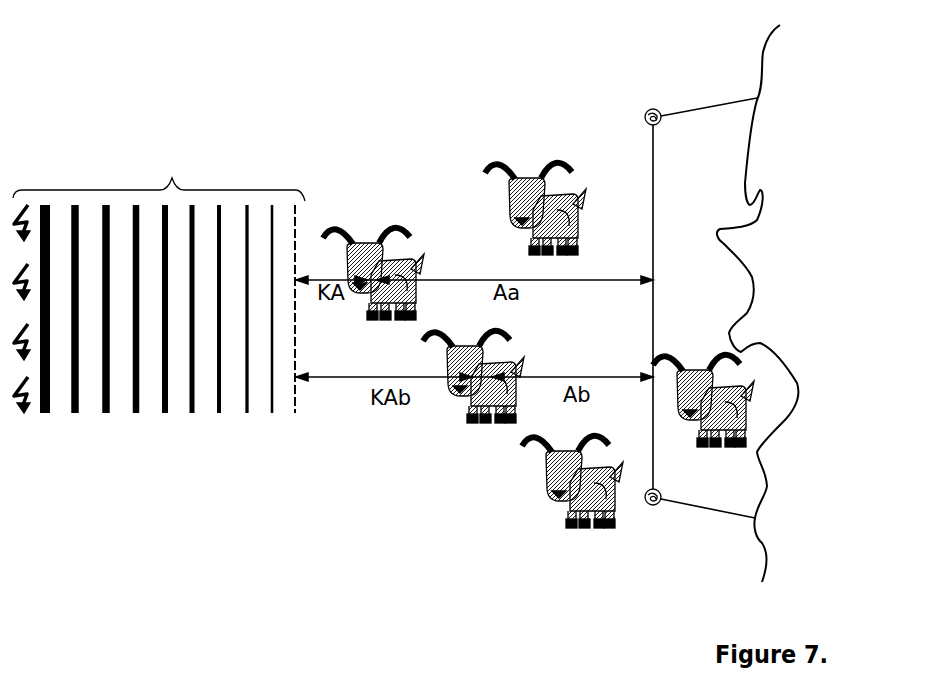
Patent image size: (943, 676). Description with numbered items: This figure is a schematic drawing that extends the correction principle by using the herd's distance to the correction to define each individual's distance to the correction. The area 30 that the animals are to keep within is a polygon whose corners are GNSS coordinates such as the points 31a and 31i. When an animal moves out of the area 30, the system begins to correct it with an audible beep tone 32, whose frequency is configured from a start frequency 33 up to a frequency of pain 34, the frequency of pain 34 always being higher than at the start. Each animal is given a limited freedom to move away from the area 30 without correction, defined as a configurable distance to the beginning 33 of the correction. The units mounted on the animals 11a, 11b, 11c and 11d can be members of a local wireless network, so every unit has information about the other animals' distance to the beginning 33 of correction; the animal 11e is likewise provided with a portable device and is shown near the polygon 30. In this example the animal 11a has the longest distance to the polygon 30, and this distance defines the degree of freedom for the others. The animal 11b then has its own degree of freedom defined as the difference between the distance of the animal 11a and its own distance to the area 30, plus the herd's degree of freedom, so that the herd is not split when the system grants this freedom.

The animal 11a is at (385, 272).
The animal 11b is at (470, 417).
The animal 11c is at (540, 178).
The animal 11d is at (567, 502).
The animal 11e is at (738, 425).
The area 30 is at (706, 148).
The GNSS coordinate 31a is at (648, 111).
The GNSS coordinate 31i is at (650, 505).
The beep tone 32 is at (172, 180).
The start frequency 33 is at (305, 200).
The frequency of pain 34 is at (15, 197).